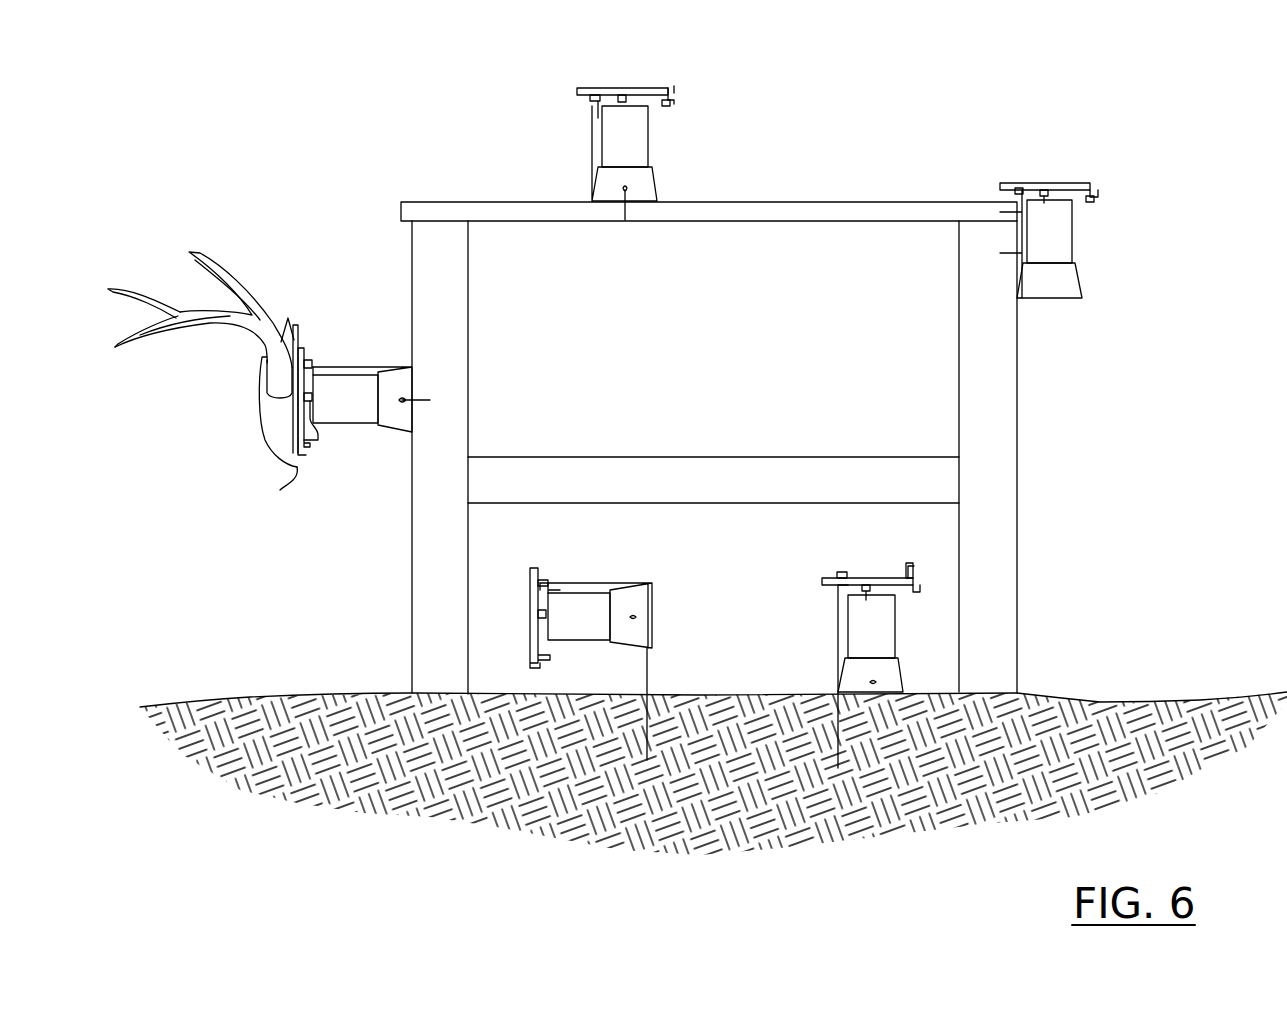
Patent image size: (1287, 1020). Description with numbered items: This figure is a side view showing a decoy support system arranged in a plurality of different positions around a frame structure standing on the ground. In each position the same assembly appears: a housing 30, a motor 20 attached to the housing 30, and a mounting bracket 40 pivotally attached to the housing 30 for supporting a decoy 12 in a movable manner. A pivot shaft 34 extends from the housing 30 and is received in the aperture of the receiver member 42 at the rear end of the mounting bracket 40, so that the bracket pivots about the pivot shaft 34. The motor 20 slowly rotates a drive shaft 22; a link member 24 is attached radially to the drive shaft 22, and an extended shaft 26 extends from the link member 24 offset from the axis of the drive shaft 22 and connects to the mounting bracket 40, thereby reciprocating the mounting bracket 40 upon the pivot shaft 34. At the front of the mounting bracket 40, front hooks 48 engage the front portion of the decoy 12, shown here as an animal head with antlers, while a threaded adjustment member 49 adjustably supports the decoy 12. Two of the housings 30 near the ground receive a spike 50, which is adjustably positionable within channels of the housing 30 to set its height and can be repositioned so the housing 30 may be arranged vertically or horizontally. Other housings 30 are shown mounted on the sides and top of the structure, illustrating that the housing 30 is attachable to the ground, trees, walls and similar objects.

The decoy 12 is at (265, 412).
The motor 20 is at (645, 145).
The drive shaft 22 is at (310, 401).
The link member 24 is at (318, 440).
The extended shaft 26 is at (622, 95).
The housing 30 is at (652, 183).
The pivot shaft 34 is at (312, 365).
The mounting bracket 40 is at (615, 93).
The receiver member 42 is at (592, 98).
The front hooks 48 is at (672, 92).
The threaded adjustment member 49 is at (670, 105).
The spike 50 is at (648, 692).